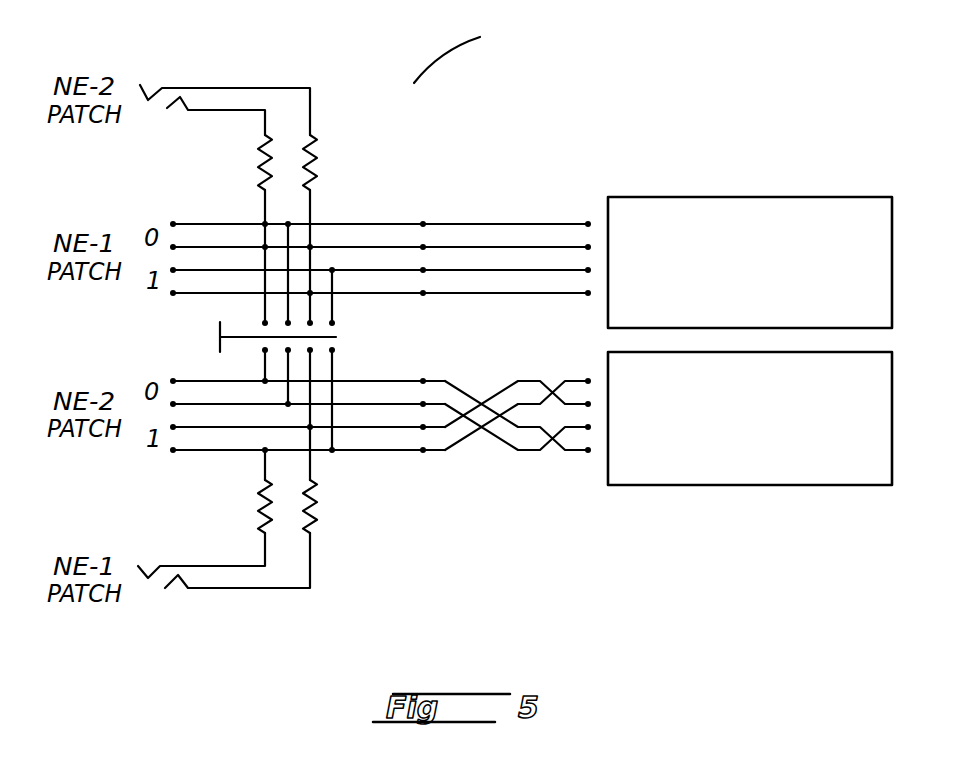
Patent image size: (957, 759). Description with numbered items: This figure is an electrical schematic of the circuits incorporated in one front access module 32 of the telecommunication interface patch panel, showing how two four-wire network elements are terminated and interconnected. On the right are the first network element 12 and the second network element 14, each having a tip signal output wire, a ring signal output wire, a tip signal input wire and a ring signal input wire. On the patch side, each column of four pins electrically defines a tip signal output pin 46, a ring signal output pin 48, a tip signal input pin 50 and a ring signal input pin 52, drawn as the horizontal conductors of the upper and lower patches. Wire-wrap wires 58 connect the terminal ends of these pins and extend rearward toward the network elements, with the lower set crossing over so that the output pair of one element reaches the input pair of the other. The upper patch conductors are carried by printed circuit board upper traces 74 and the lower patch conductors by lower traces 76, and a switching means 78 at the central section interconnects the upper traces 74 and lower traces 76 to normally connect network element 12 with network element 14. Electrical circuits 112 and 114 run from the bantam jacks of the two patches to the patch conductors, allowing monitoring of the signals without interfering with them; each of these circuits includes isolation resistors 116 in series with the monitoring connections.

The network element 12 is at (865, 462).
The network element 14 is at (862, 212).
The front access module 32 is at (469, 55).
The tip signal output pin 46 is at (329, 222).
The ring signal output pin 48 is at (368, 246).
The tip signal input pin 50 is at (347, 272).
The ring signal input pin 52 is at (383, 272).
The wire-wrap wires 58 is at (542, 249).
The upper traces 74 is at (288, 320).
The lower traces 76 is at (288, 374).
The switching means 78 is at (214, 338).
The electrical circuit 112 is at (299, 86).
The electrical circuit 114 is at (310, 562).
The isolation resistors 116 is at (316, 167).